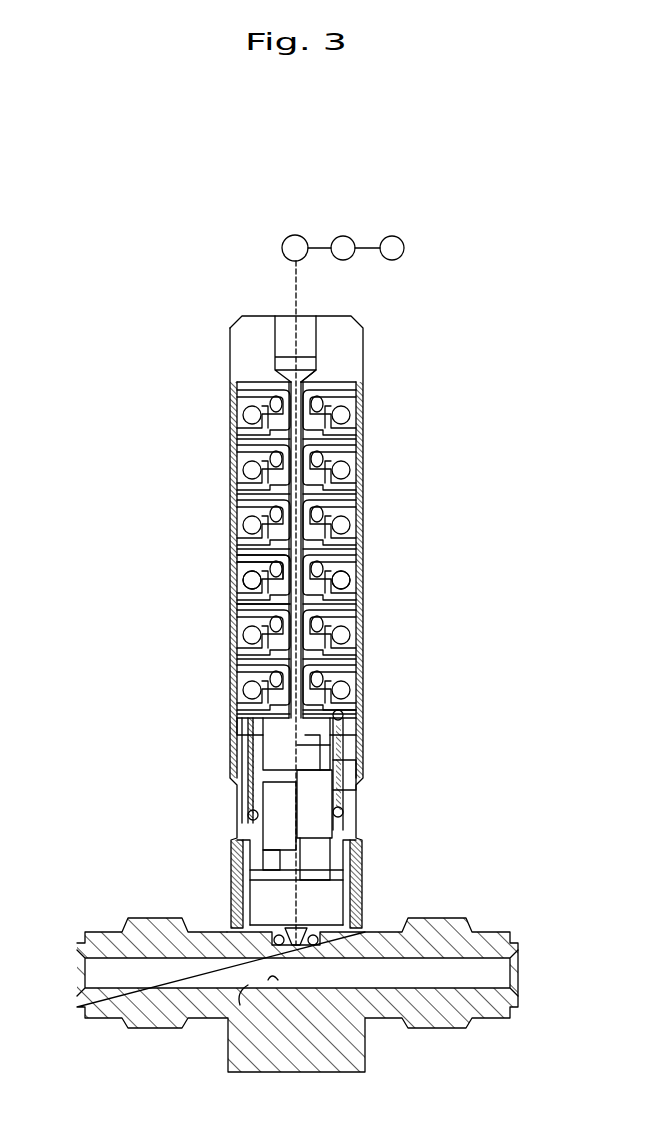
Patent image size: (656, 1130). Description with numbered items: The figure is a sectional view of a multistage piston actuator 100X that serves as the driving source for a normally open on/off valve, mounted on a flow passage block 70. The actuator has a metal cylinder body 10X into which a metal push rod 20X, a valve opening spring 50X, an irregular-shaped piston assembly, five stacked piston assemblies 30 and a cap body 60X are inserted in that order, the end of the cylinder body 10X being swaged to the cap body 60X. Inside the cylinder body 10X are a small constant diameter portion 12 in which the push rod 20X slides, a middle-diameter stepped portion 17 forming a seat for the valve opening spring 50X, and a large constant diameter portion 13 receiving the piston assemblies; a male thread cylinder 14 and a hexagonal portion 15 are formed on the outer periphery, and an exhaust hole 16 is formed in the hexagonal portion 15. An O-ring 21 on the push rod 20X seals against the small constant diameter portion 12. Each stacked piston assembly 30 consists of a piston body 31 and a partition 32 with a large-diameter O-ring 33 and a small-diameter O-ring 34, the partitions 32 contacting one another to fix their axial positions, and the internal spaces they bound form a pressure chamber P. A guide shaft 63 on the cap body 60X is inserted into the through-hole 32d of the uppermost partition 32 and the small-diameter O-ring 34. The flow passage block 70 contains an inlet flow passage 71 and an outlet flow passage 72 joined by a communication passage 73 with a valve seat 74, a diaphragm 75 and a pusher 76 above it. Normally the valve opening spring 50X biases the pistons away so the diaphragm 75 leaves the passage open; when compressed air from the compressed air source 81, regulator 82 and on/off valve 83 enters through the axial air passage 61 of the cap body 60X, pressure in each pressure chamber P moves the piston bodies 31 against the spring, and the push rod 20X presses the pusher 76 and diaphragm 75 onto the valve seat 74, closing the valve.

The multistage piston actuator 100X is at (396, 300).
The cap body 60X is at (247, 343).
The axial air passage 61 is at (302, 325).
The guide shaft 63 is at (360, 402).
The cylinder body 10X is at (363, 568).
The stacked piston assembly 30 is at (228, 393).
The piston body 31 is at (230, 571).
The partition 32 is at (230, 542).
The through-hole 32d is at (303, 385).
The large-diameter O-ring 33 is at (230, 590).
The small-diameter O-ring 34 is at (230, 556).
The large constant diameter portion 13 is at (363, 648).
The pressure chamber P is at (357, 474).
The valve opening spring 50X is at (363, 745).
The exhaust hole 16 is at (357, 783).
The middle-diameter stepped portion 17 is at (263, 803).
The small constant diameter portion 12 is at (240, 828).
The push rod 20X is at (310, 808).
The hexagonal portion 15 is at (357, 825).
The male thread cylinder 14 is at (362, 872).
The O-ring 21 is at (232, 860).
The pusher 76 is at (250, 892).
The diaphragm 75 is at (230, 915).
The flow passage block 70 is at (445, 918).
The inlet flow passage 71 is at (240, 1005).
The outlet flow passage 72 is at (452, 984).
The communication passage 73 is at (313, 948).
The valve seat 74 is at (272, 982).
The compressed air source 81 is at (396, 236).
The regulator 82 is at (345, 236).
The on/off valve 83 is at (290, 235).